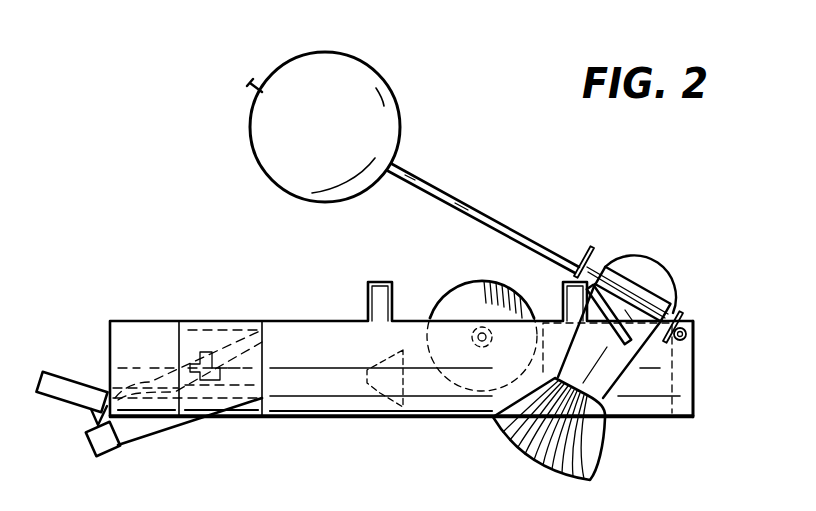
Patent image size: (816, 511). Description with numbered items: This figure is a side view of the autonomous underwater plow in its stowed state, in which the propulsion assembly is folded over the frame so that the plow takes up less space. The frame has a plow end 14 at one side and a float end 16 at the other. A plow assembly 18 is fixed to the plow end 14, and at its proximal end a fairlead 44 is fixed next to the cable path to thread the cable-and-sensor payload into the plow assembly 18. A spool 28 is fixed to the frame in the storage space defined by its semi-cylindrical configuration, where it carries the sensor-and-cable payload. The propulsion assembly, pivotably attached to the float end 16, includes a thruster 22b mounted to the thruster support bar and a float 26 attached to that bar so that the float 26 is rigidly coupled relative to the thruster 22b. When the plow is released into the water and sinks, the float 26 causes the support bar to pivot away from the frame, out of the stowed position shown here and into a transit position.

The plow end 14 is at (110, 338).
The float end 16 is at (695, 378).
The plow assembly 18 is at (152, 446).
The thruster 22b is at (638, 268).
The float 26 is at (357, 78).
The spool 28 is at (452, 292).
The fairlead 44 is at (393, 385).